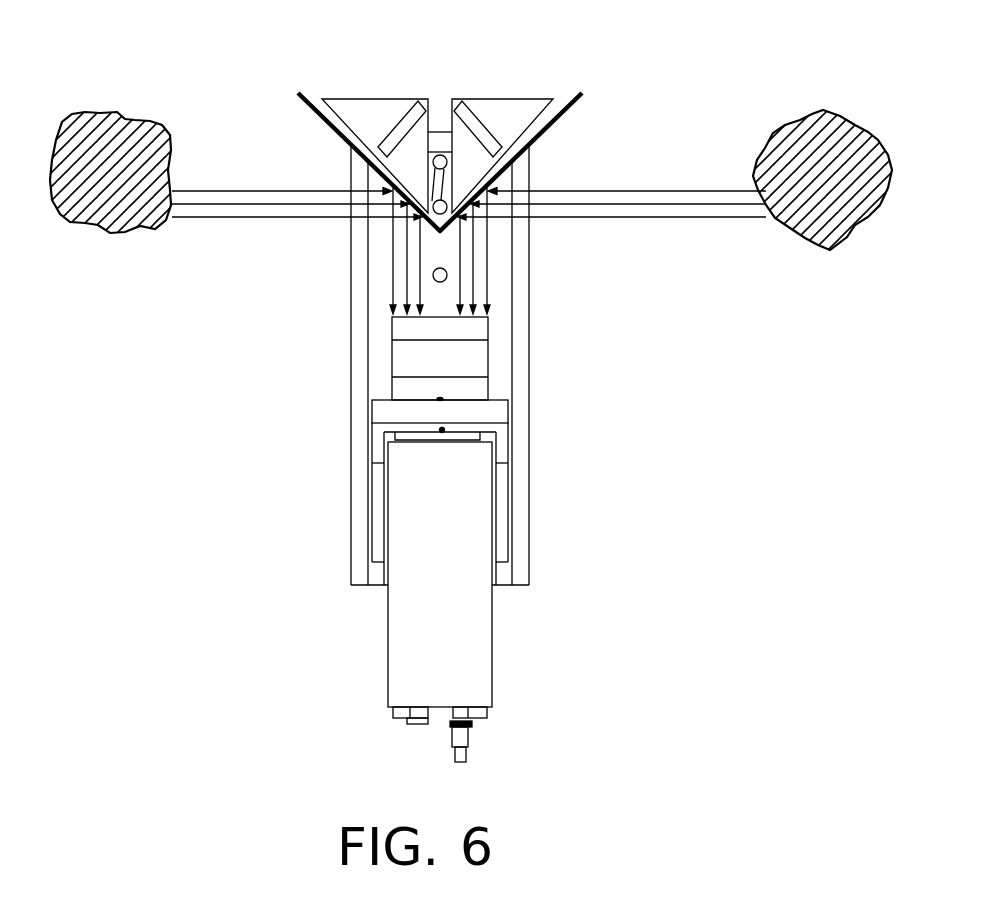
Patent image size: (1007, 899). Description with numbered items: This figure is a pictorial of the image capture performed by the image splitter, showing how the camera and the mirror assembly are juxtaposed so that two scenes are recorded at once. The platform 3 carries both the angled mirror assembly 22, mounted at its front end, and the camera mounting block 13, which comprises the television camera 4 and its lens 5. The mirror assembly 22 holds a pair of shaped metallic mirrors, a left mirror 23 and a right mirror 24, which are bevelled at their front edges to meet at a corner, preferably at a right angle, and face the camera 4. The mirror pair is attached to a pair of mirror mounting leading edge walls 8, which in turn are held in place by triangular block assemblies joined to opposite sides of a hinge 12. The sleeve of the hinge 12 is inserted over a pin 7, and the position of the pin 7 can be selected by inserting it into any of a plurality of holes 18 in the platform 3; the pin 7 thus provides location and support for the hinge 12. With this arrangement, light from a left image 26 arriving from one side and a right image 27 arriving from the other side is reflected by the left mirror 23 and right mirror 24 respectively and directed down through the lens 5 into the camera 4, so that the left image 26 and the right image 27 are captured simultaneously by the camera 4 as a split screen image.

The platform 3 is at (530, 497).
The television camera 4 is at (462, 577).
The lens 5 is at (527, 323).
The pin 7 is at (428, 205).
The mirror mounting leading edge walls 8 is at (333, 99).
The hinge 12 is at (390, 137).
The camera mounting block 13 is at (497, 410).
The holes 18 is at (455, 120).
The angled mirror assembly 22 is at (513, 108).
The left mirror 23 is at (322, 122).
The right mirror 24 is at (552, 125).
The left image 26 is at (105, 233).
The right image 27 is at (828, 250).